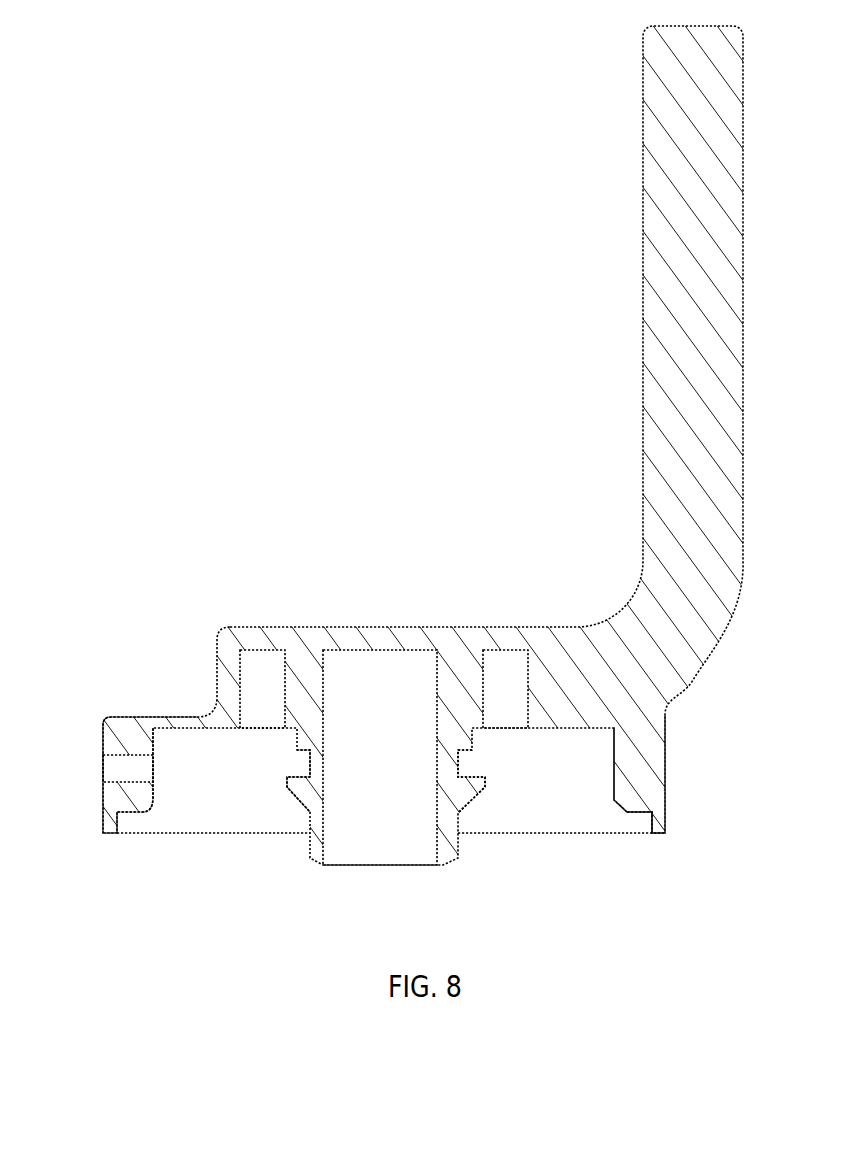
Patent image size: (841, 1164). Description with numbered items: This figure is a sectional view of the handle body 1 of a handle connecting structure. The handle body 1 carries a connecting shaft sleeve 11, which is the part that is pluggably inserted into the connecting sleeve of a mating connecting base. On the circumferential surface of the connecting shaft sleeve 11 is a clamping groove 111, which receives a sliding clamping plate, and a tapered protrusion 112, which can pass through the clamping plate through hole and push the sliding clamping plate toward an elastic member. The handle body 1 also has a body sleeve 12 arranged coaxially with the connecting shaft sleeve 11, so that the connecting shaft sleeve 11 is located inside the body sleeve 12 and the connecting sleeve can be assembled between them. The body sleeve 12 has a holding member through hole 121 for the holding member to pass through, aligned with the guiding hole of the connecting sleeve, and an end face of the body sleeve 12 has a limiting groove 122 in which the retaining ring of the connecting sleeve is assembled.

The handle body 1 is at (633, 457).
The connecting shaft sleeve 11 is at (305, 695).
The clamping groove 111 is at (470, 767).
The tapered protrusion 112 is at (305, 785).
The body sleeve 12 is at (115, 717).
The holding member through hole 121 is at (117, 767).
The limiting groove 122 is at (632, 818).